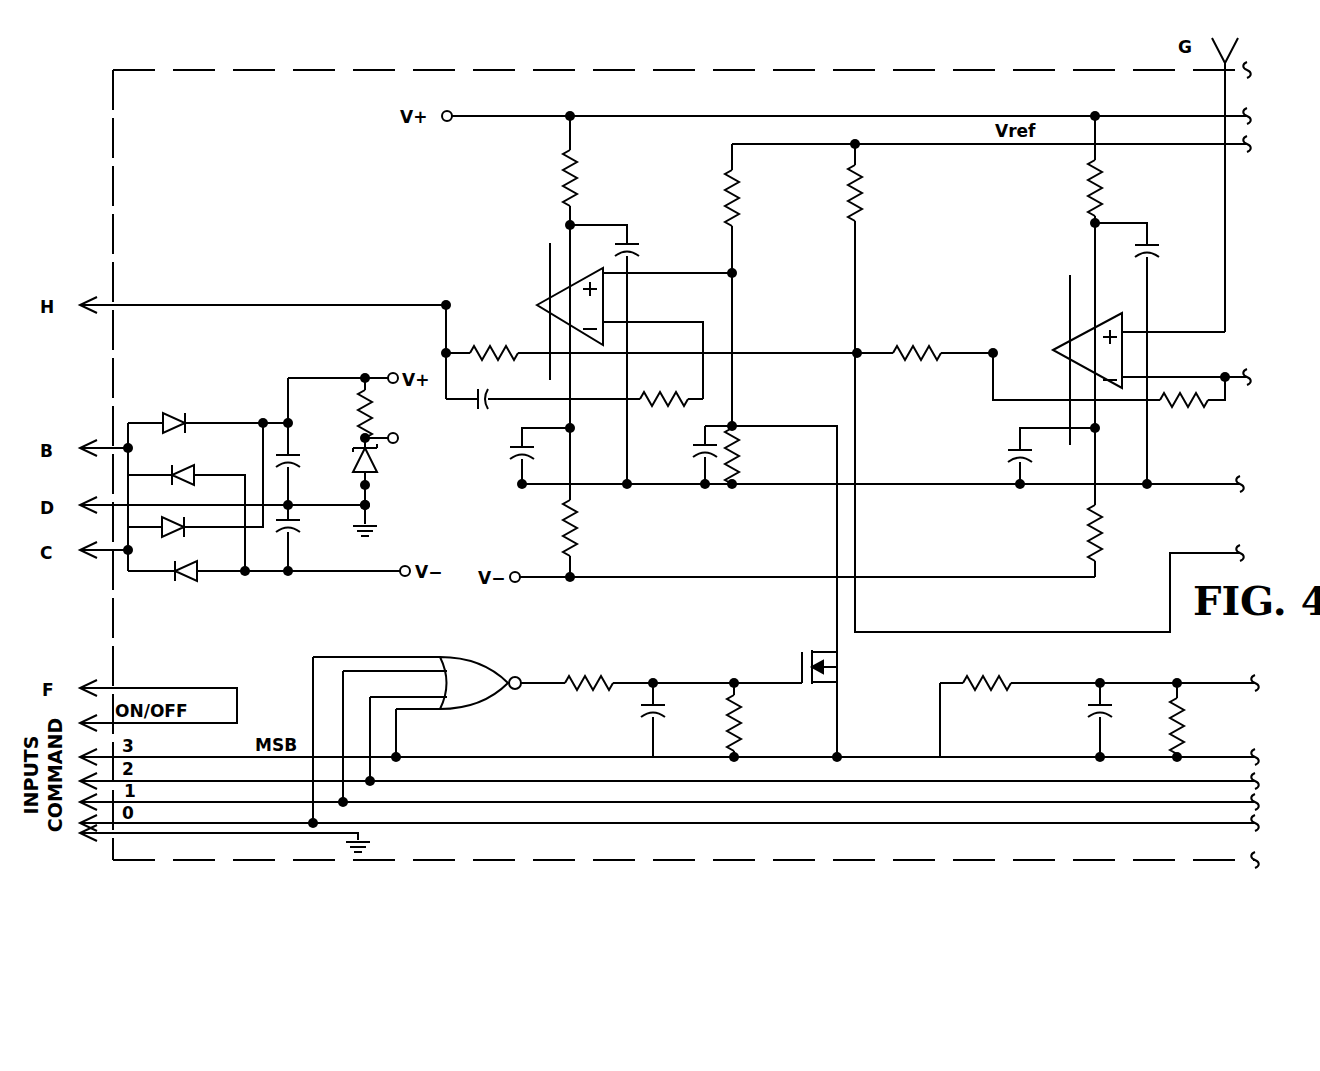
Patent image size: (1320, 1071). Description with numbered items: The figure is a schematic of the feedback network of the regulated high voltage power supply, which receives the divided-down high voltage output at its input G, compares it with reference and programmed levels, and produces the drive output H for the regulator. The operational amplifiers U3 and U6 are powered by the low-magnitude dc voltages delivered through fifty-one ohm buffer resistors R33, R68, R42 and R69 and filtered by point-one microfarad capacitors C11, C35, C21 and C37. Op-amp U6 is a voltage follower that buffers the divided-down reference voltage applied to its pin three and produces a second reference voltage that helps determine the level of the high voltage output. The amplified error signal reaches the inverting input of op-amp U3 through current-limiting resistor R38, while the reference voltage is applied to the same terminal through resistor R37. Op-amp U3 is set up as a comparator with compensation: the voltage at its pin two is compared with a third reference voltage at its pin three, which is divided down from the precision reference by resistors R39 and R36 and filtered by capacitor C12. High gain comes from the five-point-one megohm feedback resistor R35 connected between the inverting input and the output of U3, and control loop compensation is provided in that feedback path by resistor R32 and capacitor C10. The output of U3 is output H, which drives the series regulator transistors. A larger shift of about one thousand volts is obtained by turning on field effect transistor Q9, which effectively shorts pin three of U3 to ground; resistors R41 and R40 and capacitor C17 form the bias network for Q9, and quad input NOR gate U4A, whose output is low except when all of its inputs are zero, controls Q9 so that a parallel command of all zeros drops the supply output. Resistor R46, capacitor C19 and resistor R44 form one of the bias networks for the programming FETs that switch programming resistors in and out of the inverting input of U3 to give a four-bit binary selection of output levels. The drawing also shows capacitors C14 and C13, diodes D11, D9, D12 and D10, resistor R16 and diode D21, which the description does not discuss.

The buffer resistor R33 is at (596, 173).
The buffer resistor R68 is at (597, 538).
The filter capacitor C11 is at (631, 354).
The operational amplifier U3 is at (605, 322).
The feedback resistor R35 is at (654, 354).
The compensation capacitor C10 is at (543, 407).
The compensation resistor R32 is at (671, 396).
The filter capacitor C35 is at (542, 456).
The divider resistor R39 is at (765, 287).
The divider resistor R36 is at (770, 465).
The filter capacitor C12 is at (693, 455).
The reference resistor R37 is at (1046, 388).
The current-limiting resistor R38 is at (927, 362).
The operational amplifier U6 is at (1122, 360).
The buffer resistor R42 is at (1120, 310).
The buffer resistor R69 is at (1120, 541).
The filter capacitor C21 is at (1150, 353).
The filter capacitor C37 is at (1022, 455).
The capacitor 4.7uF 75V C14 is at (316, 465).
The capacitor 4.7uF 75V C13 is at (336, 537).
The diode 1N3600 D11 is at (208, 426).
The diode 1N3600 D9 is at (189, 517).
The diode 1N3600 D12 is at (195, 491).
The diode 1N3600 D10 is at (264, 583).
The resistor 24K R16 is at (401, 413).
The zener diode 6.2V 1N4627 D21 is at (406, 490).
The quad input NOR gate U4A is at (436, 730).
The bias resistor R41 is at (683, 682).
The bias capacitor C17 is at (678, 720).
The bias resistor R40 is at (763, 722).
The field effect transistor Q9 is at (858, 665).
The bias resistor R46 is at (1099, 701).
The bias capacitor C19 is at (1071, 722).
The bias resistor R44 is at (1203, 722).